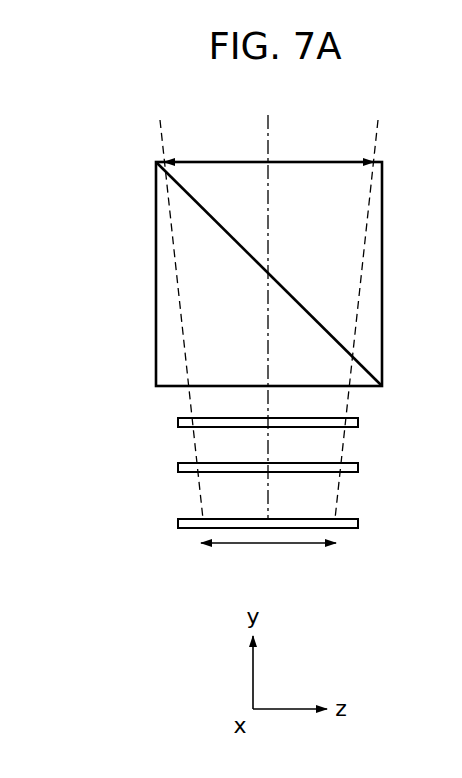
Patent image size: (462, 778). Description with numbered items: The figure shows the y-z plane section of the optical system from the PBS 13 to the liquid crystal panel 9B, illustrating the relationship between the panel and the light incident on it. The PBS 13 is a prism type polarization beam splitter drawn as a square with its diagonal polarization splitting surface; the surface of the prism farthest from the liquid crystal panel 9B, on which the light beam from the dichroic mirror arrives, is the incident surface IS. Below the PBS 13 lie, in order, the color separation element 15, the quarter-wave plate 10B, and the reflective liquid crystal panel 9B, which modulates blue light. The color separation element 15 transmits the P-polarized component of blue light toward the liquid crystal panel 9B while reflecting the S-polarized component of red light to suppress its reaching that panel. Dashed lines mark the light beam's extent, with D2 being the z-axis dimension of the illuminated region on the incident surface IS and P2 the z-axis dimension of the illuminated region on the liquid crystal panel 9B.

The PBS 13 is at (156, 224).
The color separation element 15 is at (178, 422).
The quarter-wave plate for blue light 10B is at (358, 467).
The liquid crystal panel for blue light 9B is at (178, 523).
The incident surface IS is at (382, 163).
The dimension of the PBS effective illumination region in the z-axis direction D2 is at (269, 146).
The dimension of the panel effective illumination region in the z-axis direction P2 is at (268, 560).